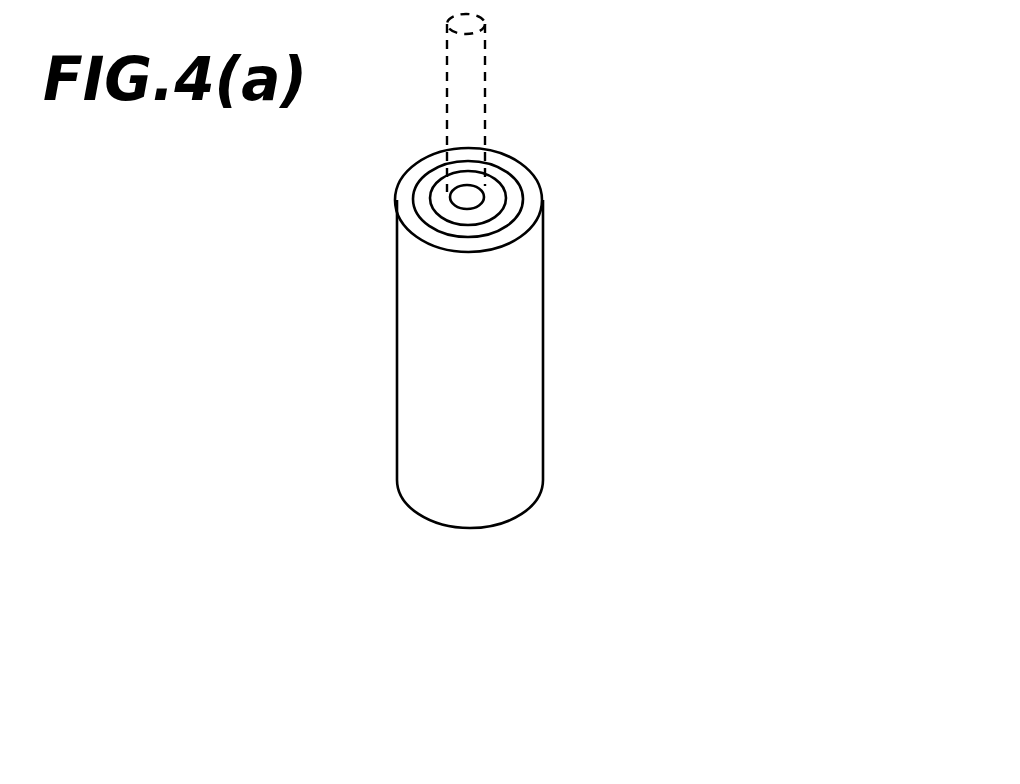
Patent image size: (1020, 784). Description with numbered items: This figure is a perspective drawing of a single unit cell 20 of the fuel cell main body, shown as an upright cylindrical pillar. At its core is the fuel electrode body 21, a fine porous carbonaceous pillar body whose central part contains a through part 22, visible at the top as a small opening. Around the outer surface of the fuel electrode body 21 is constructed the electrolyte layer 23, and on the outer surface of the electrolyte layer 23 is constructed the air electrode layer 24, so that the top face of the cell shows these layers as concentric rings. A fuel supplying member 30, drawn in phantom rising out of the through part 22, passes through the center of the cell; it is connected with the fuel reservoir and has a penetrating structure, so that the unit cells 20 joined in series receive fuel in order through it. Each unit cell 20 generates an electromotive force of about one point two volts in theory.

The unit cell 20 is at (545, 408).
The fuel electrode body 21 is at (495, 192).
The through part 22 is at (463, 188).
The electrolyte layer 23 is at (513, 200).
The air electrode layer 24 is at (520, 222).
The fuel supplying member 30 is at (472, 55).